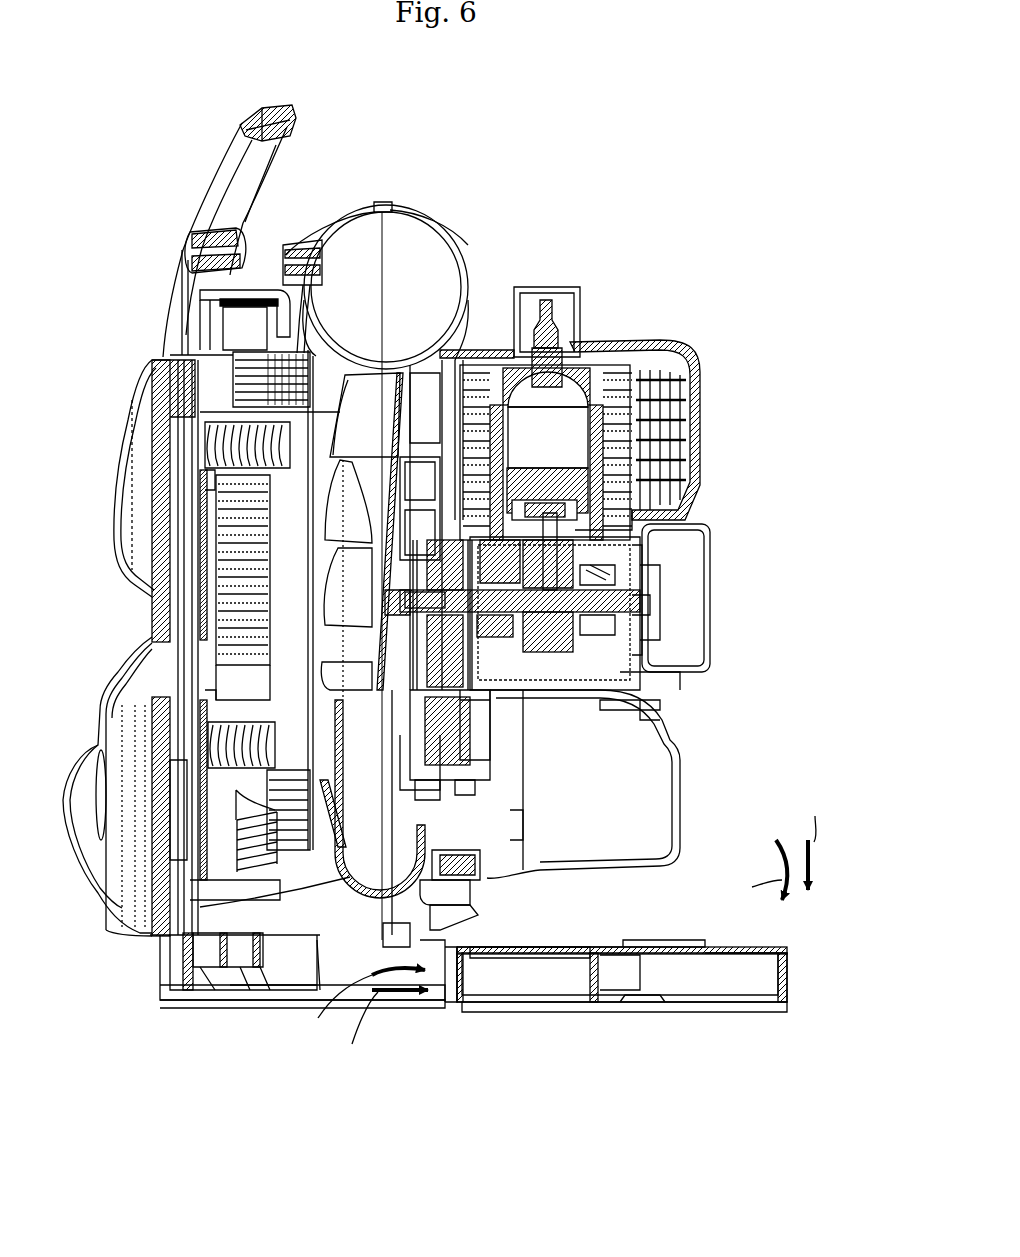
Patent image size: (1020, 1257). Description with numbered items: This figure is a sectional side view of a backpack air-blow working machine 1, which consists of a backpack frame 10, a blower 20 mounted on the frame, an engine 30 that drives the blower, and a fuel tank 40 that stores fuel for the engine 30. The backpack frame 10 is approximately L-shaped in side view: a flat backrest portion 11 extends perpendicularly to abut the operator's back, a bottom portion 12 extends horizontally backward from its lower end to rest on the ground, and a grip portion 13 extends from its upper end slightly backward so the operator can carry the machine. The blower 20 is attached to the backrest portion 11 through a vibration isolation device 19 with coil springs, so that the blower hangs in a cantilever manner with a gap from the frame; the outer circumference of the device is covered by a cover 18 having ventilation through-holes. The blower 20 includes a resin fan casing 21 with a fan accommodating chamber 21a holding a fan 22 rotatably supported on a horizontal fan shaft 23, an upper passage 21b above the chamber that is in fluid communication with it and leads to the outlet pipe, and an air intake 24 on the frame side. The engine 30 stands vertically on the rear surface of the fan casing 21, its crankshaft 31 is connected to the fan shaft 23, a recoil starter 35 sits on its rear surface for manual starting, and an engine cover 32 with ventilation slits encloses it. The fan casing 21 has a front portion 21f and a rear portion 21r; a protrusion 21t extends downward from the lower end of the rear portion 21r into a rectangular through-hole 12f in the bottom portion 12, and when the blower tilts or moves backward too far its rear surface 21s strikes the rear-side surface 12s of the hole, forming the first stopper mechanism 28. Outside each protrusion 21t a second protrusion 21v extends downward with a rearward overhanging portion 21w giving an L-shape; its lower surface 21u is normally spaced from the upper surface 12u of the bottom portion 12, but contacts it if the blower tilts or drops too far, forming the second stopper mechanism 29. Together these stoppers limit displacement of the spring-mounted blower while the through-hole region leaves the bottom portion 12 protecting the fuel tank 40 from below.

The backpack air-blow working machine 1 is at (680, 150).
The backpack frame 10 is at (213, 165).
The backrest portion 11 is at (165, 350).
The bottom portion 12 is at (787, 990).
The through-hole 12f is at (448, 990).
The surface on the rear surface side of the through-hole 12s is at (450, 990).
The upper surface of the bottom portion 12u is at (620, 940).
The grip portion 13 is at (185, 225).
The cover 18 is at (262, 302).
The vibration isolation device 19 is at (232, 452).
The blower 20 is at (300, 225).
The fan casing 21 is at (382, 205).
The fan accommodating chamber 21a is at (156, 414).
The upper passage 21b is at (444, 242).
The front portion 21f is at (340, 218).
The rear portion 21r is at (420, 218).
The rear surface of the protrusion 21s is at (440, 990).
The protrusion 21t is at (310, 998).
The lower surface of the protrusion 21u is at (440, 895).
The second protrusion 21v is at (455, 857).
The overhanging portion 21w is at (484, 882).
The fan 22 is at (372, 368).
The fan shaft 23 is at (330, 598).
The air intake 24 is at (296, 468).
The first stopper mechanism 28 is at (489, 1092).
The second stopper mechanism 29 is at (652, 1055).
The engine 30 is at (628, 372).
The crankshaft 31 is at (444, 595).
The engine cover 32 is at (690, 345).
The recoil starter 35 is at (712, 603).
The fuel tank 40 is at (694, 822).